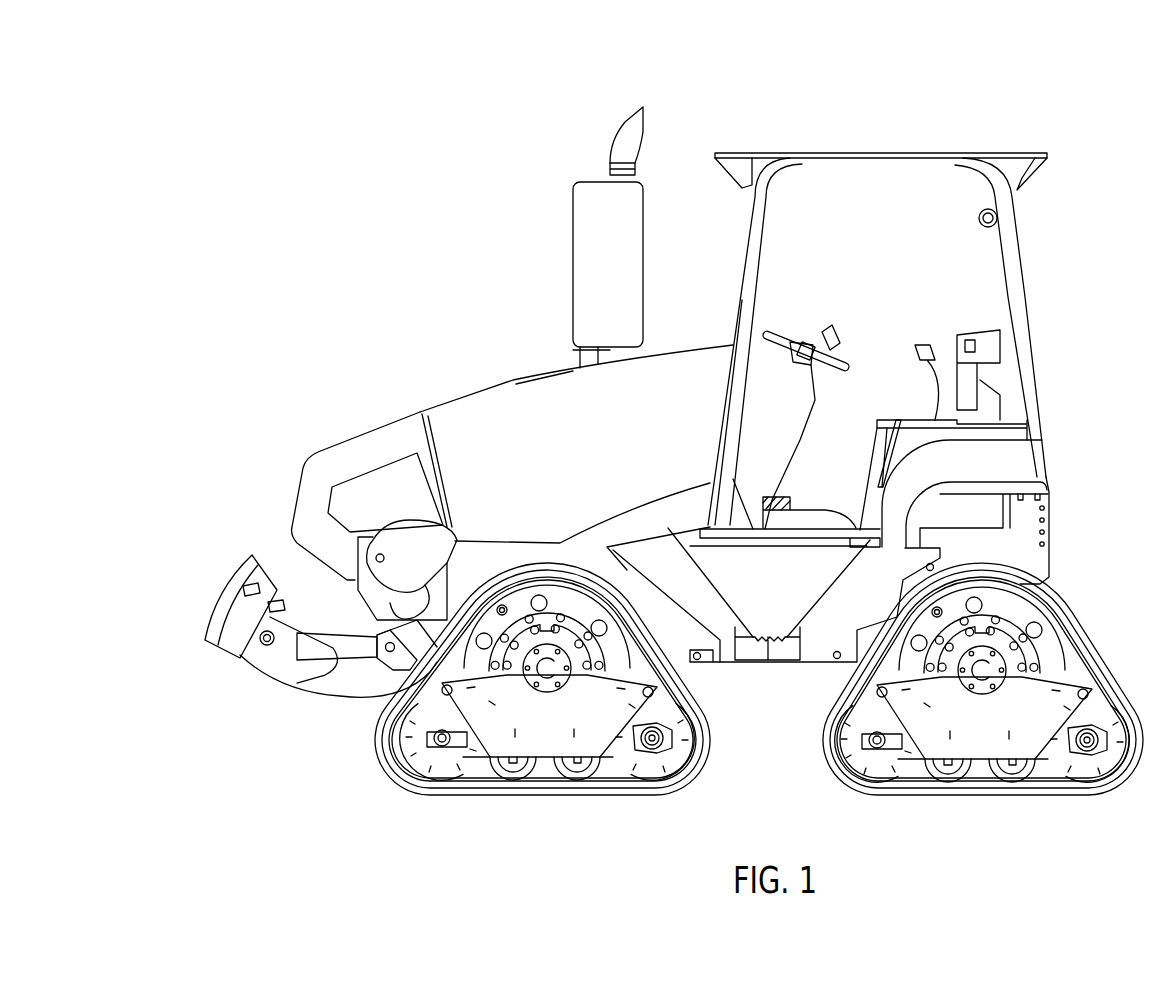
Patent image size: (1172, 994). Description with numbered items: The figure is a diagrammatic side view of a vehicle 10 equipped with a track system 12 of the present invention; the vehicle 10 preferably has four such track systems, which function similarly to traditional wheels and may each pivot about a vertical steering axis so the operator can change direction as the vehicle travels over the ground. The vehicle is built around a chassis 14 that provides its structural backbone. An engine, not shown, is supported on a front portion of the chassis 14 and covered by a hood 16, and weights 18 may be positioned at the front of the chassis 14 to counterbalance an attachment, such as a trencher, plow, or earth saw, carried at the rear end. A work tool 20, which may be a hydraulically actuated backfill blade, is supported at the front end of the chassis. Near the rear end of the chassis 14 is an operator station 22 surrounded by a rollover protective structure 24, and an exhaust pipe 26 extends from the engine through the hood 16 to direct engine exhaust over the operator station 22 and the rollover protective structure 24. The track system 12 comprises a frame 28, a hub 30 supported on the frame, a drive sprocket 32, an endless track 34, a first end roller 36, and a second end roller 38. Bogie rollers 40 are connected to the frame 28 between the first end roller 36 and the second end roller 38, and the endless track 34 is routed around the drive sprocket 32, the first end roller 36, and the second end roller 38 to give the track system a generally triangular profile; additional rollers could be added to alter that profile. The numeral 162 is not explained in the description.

The vehicle 10 is at (902, 105).
The track system 12 is at (427, 797).
The chassis 14 is at (700, 693).
The hood 16 is at (503, 380).
The weights 18 is at (327, 445).
The work tool 20 is at (242, 612).
The operator station 22 is at (902, 297).
The Rollover Protective Structure (ROPS) 24 is at (1025, 282).
The exhaust pipe 26 is at (625, 118).
The frame 28 is at (483, 757).
The hub 30 is at (537, 676).
The drive sprocket 32 is at (462, 685).
The endless track 34 is at (588, 795).
The first end roller 36 is at (683, 773).
The second end roller 38 is at (410, 770).
The bogie rollers 40 is at (570, 780).
The steering wheel 162 is at (790, 327).